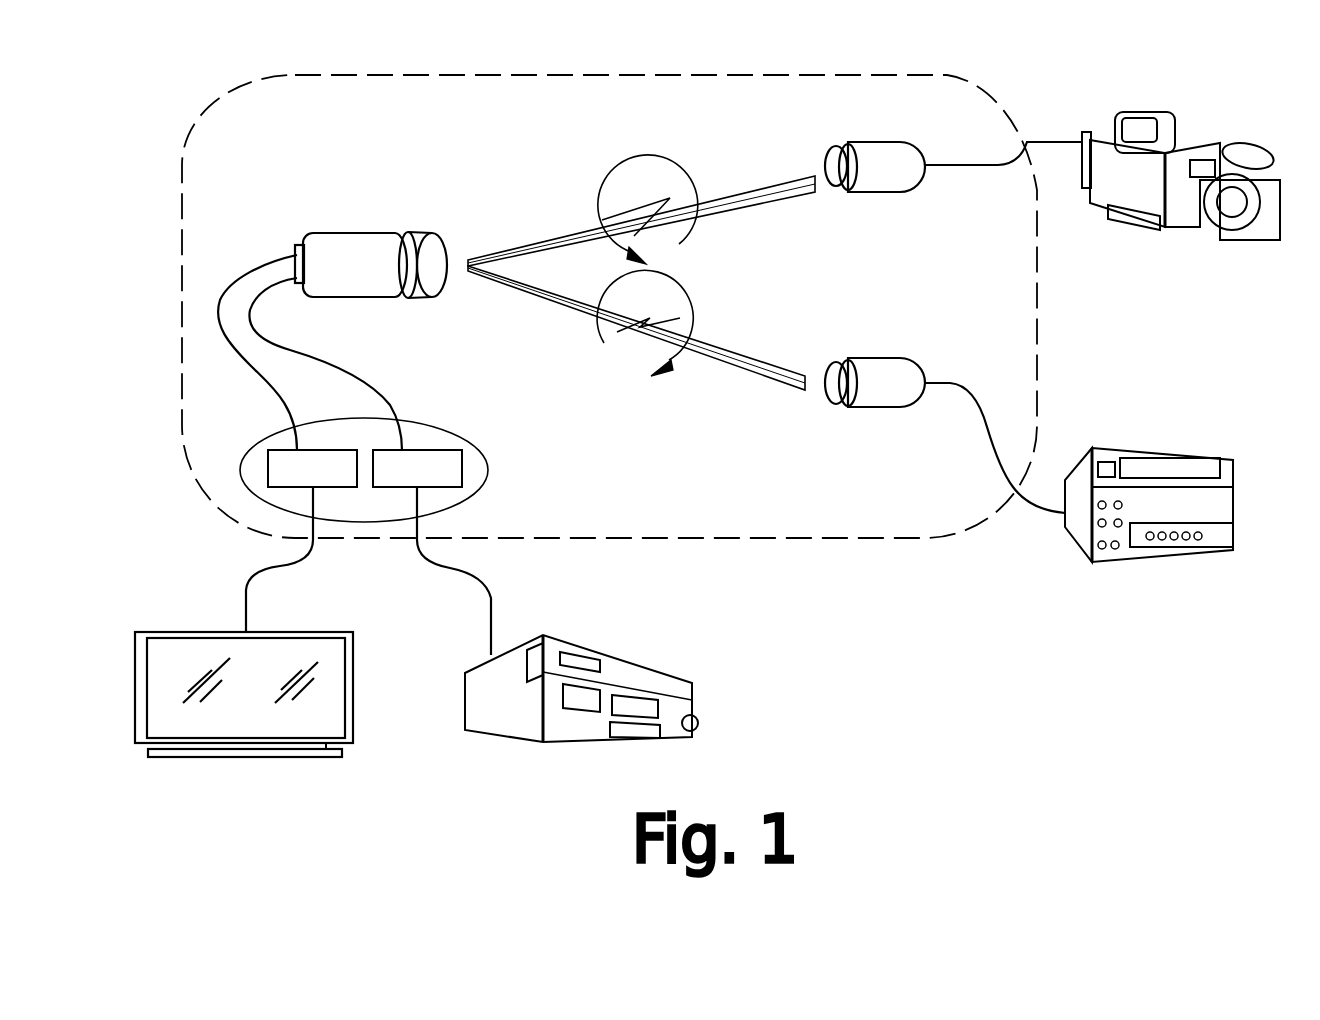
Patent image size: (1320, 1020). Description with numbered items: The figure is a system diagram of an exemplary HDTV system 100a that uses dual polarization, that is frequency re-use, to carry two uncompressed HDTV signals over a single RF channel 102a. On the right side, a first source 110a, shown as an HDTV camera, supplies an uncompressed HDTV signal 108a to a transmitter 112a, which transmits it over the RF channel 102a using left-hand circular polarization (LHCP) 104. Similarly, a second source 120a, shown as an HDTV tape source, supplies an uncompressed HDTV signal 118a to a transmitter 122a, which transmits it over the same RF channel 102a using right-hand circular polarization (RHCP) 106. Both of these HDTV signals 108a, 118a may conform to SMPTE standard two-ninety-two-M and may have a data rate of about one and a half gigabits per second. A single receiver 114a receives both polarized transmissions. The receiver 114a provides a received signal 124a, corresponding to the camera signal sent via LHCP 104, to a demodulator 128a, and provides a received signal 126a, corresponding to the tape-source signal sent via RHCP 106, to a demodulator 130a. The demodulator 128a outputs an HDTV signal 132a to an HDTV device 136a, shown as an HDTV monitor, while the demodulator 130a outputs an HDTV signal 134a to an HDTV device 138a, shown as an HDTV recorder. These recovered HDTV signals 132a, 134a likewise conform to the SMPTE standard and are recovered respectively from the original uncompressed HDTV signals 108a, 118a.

The HDTV system 100a is at (236, 40).
The RF channel 102a is at (641, 272).
The left-hand circular polarization (LHCP) 104 is at (713, 202).
The right-hand circular polarization (RHCP) 106 is at (707, 353).
The uncompressed HDTV signal 108a is at (1045, 140).
The source 110a is at (1146, 115).
The transmitter 112a is at (893, 192).
The receiver 114a is at (360, 232).
The uncompressed HDTV signal 118a is at (955, 385).
The source 120a is at (1187, 455).
The transmitter 122a is at (880, 358).
The received signal 124a is at (218, 295).
The received signal 126a is at (265, 337).
The demodulator 128a is at (285, 450).
The demodulator 130a is at (462, 461).
The HDTV signal 132a is at (262, 570).
The HDTV signal 134a is at (480, 580).
The HDTV device 136a is at (220, 632).
The HDTV device 138a is at (478, 668).